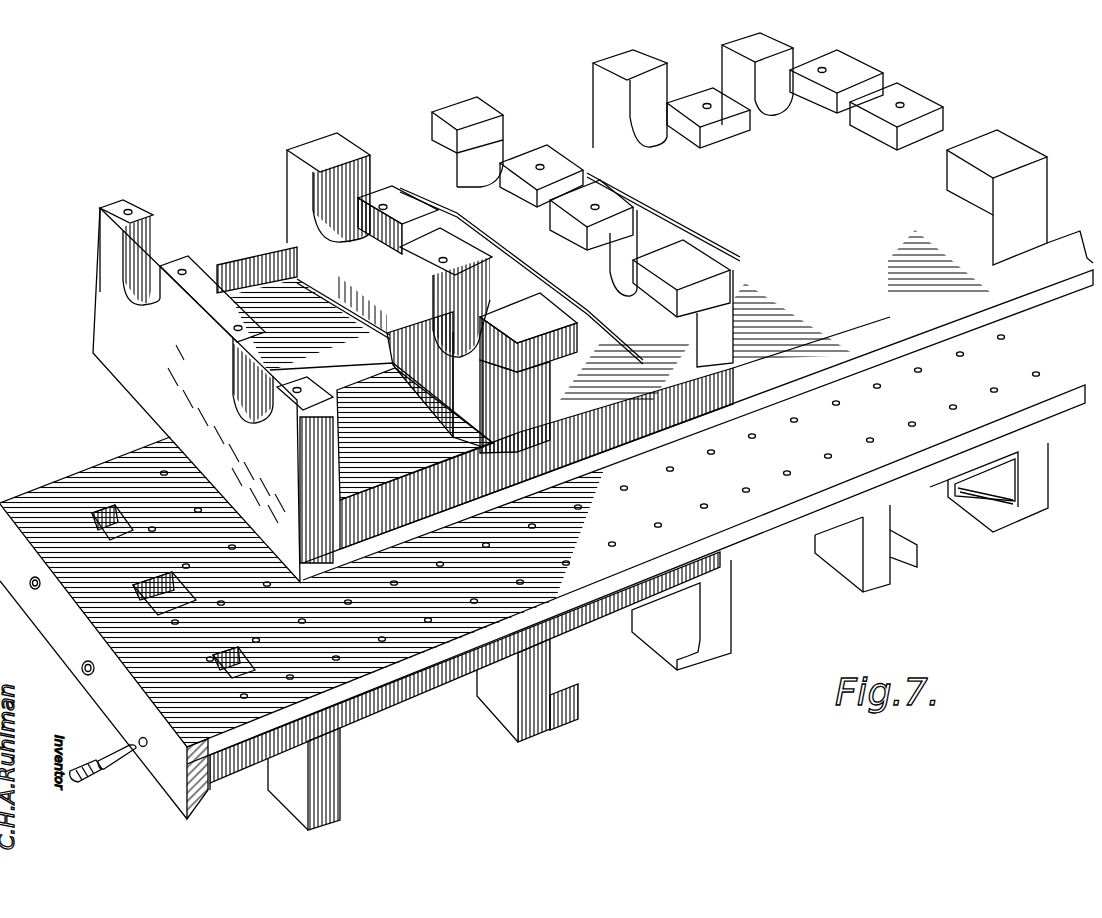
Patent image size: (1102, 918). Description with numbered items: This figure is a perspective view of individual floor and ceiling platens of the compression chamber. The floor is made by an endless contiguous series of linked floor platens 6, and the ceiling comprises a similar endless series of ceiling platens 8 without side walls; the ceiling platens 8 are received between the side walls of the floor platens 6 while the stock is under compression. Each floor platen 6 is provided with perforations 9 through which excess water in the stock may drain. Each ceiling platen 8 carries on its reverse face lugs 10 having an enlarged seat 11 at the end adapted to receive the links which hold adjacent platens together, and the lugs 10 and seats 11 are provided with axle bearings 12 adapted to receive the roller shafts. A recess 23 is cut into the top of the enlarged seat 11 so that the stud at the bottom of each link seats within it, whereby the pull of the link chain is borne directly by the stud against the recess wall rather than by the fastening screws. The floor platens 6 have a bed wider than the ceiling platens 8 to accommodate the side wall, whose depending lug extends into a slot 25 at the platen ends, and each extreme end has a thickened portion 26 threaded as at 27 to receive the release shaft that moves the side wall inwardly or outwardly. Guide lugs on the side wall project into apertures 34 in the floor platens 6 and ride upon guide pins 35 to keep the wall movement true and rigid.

The floor platen 6 is at (60, 492).
The ceiling platen 8 is at (1040, 292).
The perforations 9 is at (993, 393).
The lugs 10 is at (340, 759).
The enlarged seat 11 is at (325, 148).
The axle bearings 12 is at (243, 362).
The recess 23 is at (890, 72).
The slot 25 is at (132, 585).
The thickened portion 26 is at (207, 803).
The threads 27 is at (84, 674).
The apertures 34 is at (93, 508).
The guide pins 35 is at (94, 772).